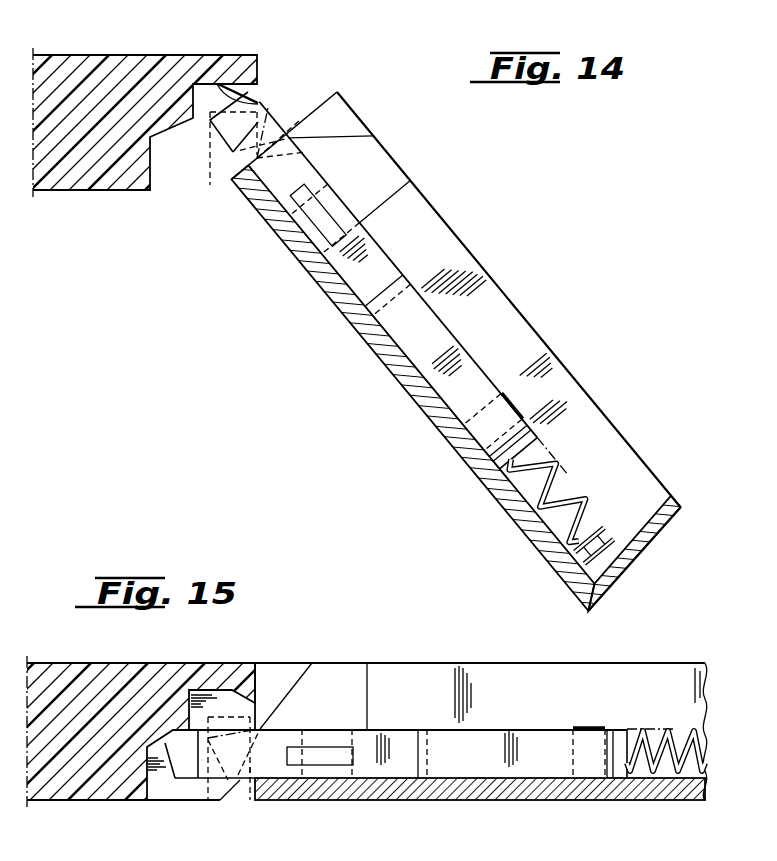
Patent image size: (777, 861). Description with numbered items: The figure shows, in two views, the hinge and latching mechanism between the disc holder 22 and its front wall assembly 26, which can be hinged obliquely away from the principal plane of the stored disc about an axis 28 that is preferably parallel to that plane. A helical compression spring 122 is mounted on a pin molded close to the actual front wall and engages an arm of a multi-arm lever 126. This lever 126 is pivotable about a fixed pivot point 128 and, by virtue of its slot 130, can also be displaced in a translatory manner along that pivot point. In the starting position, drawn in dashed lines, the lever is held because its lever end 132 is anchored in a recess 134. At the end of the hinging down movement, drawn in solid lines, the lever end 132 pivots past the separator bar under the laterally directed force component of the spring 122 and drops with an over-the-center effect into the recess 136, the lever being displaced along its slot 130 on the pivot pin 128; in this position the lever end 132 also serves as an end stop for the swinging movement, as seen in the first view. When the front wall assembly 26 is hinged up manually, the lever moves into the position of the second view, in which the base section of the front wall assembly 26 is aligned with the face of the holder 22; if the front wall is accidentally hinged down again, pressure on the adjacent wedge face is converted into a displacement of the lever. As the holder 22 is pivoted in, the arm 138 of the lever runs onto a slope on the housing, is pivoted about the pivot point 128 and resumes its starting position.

In FIG. 14, the disc holder 22 is at (100, 48).
In FIG. 15, the disc holder 22 is at (75, 657).
In FIG. 14, the front wall assembly 26 is at (530, 547).
In FIG. 15, the front wall assembly 26 is at (668, 796).
In FIG. 14, the axis 28 is at (257, 158).
In FIG. 15, the axis 28 is at (250, 800).
In FIG. 14, the helical compression spring 122 is at (583, 503).
In FIG. 15, the helical compression spring 122 is at (660, 731).
In FIG. 14, the multi-arm lever 126 is at (420, 386).
In FIG. 15, the multi-arm lever 126 is at (532, 788).
In FIG. 14, the pivot point 128 is at (485, 431).
In FIG. 15, the pivot point 128 is at (590, 774).
In FIG. 14, the slot 130 is at (376, 314).
In FIG. 15, the slot 130 is at (430, 771).
In FIG. 14, the lever end 132 is at (236, 117).
In FIG. 15, the lever end 132 is at (185, 771).
In FIG. 14, the recess 134 is at (214, 178).
In FIG. 15, the recess 134 is at (209, 800).
In FIG. 14, the recess 136 is at (252, 98).
In FIG. 15, the recess 136 is at (149, 790).
In FIG. 14, the arm 138 is at (310, 220).
In FIG. 15, the arm 138 is at (340, 758).